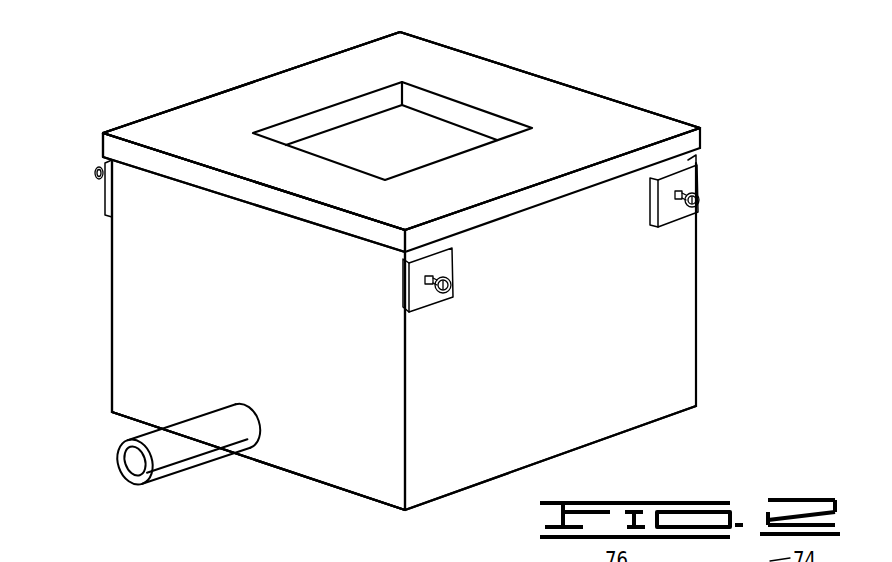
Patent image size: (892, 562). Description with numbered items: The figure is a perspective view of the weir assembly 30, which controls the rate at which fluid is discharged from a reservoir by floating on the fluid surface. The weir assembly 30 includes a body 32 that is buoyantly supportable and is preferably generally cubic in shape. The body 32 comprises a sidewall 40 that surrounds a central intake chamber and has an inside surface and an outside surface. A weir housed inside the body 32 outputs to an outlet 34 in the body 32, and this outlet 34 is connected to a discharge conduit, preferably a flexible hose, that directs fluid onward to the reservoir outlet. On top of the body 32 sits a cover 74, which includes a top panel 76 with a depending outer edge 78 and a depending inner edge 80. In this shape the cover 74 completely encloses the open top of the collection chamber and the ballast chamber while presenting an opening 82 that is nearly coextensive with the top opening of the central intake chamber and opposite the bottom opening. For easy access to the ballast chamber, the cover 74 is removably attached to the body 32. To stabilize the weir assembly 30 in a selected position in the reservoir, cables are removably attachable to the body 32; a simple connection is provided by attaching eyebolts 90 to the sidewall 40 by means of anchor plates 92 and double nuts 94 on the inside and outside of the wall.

The weir assembly 30 is at (576, 75).
The body 32 is at (694, 334).
The outlet 34 is at (188, 462).
The sidewall 40 is at (143, 382).
The cover 74 is at (577, 118).
The top panel 76 is at (268, 100).
The depending outer edge 78 is at (143, 167).
The depending inner edge 80 is at (333, 118).
The opening 82 is at (467, 125).
The eyebolt 90 is at (700, 207).
The anchor plate 92 is at (700, 147).
The double nuts 94 is at (679, 190).